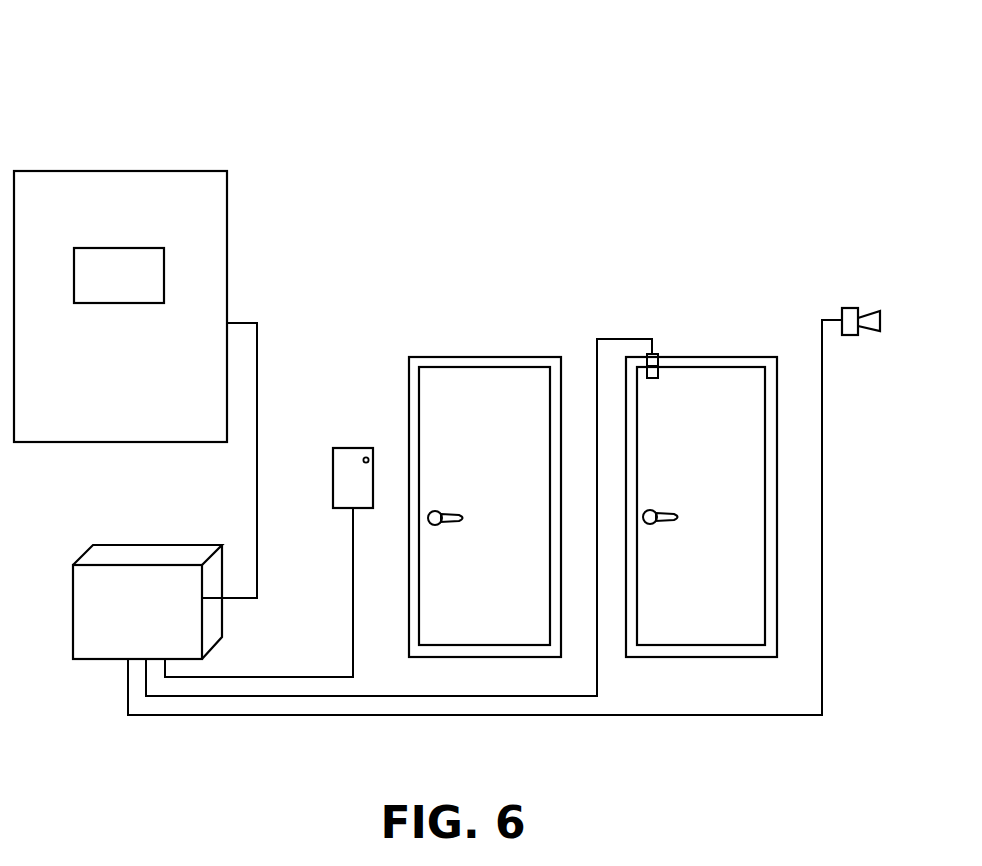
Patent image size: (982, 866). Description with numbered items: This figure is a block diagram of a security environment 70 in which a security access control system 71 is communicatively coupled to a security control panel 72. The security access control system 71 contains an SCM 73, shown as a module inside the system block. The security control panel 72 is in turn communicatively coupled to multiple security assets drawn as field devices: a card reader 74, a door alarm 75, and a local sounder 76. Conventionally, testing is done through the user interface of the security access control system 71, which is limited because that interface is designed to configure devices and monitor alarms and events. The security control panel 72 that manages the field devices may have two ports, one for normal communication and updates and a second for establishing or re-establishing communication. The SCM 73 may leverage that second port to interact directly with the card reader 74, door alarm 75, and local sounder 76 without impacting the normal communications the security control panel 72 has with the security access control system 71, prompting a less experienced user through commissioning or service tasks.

The security environment 70 is at (105, 48).
The security access control system 71 is at (170, 171).
The security control panel 72 is at (147, 544).
The SCM 73 is at (118, 247).
The card reader 74 is at (353, 448).
The door alarm 75 is at (652, 379).
The local sounder 76 is at (853, 307).